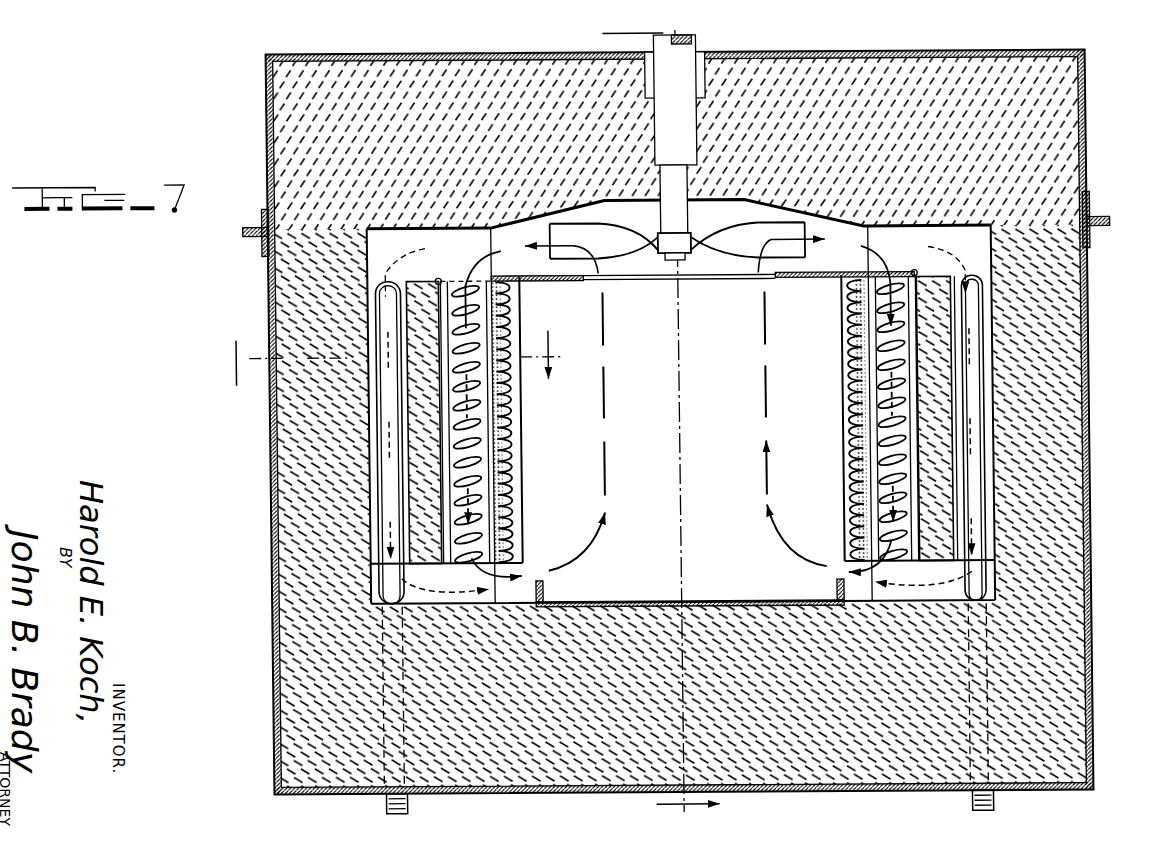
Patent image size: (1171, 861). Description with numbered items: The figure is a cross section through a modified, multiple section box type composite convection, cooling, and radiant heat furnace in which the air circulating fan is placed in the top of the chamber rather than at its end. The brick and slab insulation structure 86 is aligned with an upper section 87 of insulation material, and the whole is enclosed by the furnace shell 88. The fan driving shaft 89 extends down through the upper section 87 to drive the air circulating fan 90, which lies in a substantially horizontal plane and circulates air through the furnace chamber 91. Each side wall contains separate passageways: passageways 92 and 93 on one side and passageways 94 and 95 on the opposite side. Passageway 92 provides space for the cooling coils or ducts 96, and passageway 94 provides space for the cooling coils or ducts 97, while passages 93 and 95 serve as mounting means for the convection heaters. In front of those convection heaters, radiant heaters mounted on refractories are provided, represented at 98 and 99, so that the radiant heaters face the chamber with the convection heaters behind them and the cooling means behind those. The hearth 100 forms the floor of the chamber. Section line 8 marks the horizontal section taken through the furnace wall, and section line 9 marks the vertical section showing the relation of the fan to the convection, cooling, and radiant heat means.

The section line 8— 8 is at (392, 358).
The section line 9— 9 is at (651, 421).
The brick and slab insulation structure 86 is at (312, 500).
The upper section of insulation material 87 is at (318, 141).
The furnace shell 88 is at (270, 318).
The fan driving shaft 89 is at (692, 76).
The air circulating fan 90 is at (740, 250).
The furnace chamber 91 is at (712, 483).
The passageway 92 is at (377, 290).
The passageway 93 is at (483, 302).
The passageway 94 is at (985, 293).
The passageway 95 is at (872, 302).
The cooling coils or ducts 96 is at (392, 590).
The cooling coils or ducts 97 is at (987, 583).
The radiant heaters mounted on refractories 98 is at (505, 432).
The radiant heaters mounted on refractories 99 is at (855, 395).
The hearth 100 is at (715, 600).